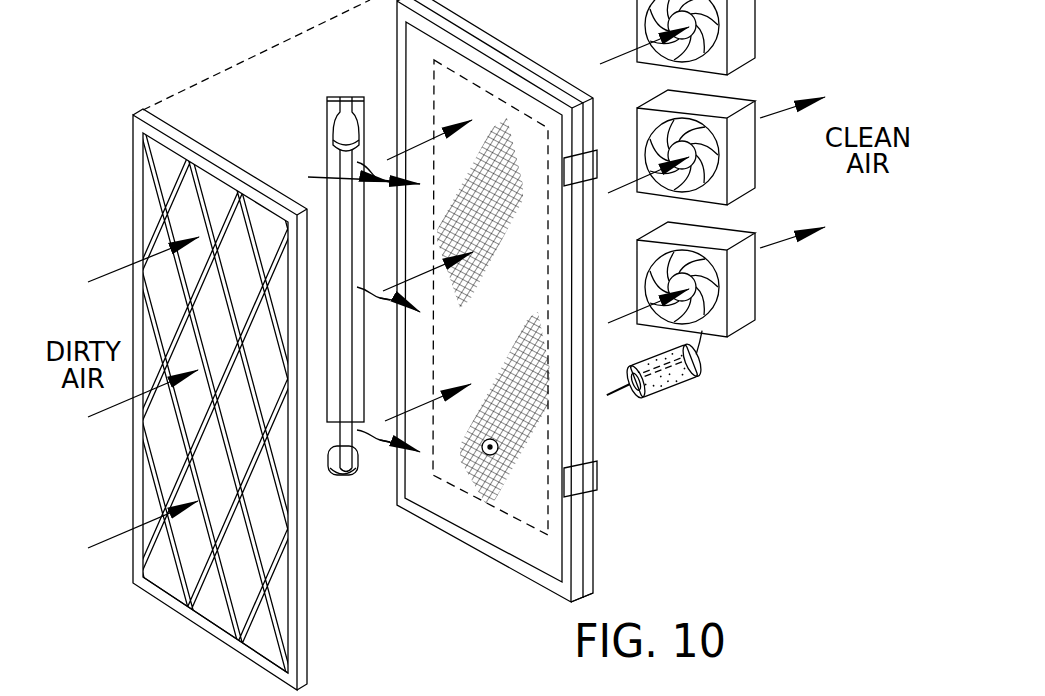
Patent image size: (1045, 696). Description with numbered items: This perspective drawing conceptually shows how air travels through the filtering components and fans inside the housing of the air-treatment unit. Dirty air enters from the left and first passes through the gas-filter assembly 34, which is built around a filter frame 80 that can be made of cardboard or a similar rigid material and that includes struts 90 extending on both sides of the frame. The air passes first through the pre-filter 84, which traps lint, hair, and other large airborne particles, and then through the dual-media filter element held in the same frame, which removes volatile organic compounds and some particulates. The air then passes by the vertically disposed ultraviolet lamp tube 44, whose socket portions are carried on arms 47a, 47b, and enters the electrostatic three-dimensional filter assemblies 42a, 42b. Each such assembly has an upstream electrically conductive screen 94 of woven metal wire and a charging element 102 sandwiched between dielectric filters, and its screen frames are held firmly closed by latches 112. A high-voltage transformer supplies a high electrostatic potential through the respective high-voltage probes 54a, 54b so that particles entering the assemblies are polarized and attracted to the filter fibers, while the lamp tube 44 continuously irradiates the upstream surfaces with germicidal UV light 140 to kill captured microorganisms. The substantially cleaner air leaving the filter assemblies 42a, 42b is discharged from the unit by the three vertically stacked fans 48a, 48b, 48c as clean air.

The gas-filter assembly 34 is at (258, 348).
The filter frame 80 is at (304, 606).
The pre-filter 84 is at (166, 574).
The struts 90 is at (273, 568).
The ultraviolet lamp tube 44 is at (302, 317).
The arm 47a is at (338, 135).
The arm 47b is at (350, 478).
The germicidal UV light 140 is at (378, 297).
The electrostatic 3-dimensional filter assembly 42a is at (542, 324).
The electrostatic 3-dimensional filter assembly 42b is at (483, 302).
The charging element 102 is at (549, 528).
The latches 112 is at (587, 481).
The upstream electrically conductive screen 94 is at (510, 410).
The fan 48a is at (748, 24).
The fan 48b is at (748, 150).
The fan 48c is at (748, 290).
The high-voltage probe 54a is at (701, 400).
The high-voltage probe 54b is at (681, 391).